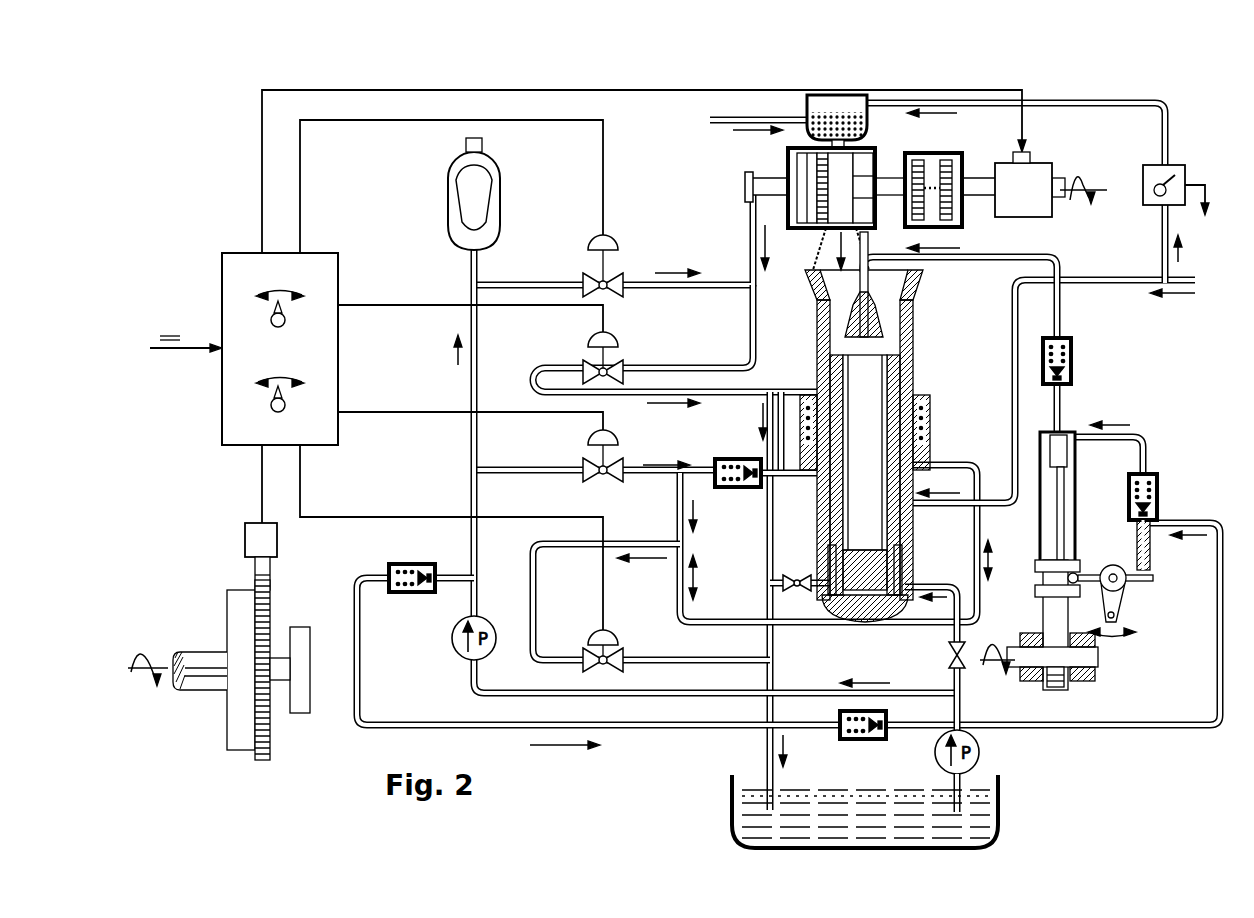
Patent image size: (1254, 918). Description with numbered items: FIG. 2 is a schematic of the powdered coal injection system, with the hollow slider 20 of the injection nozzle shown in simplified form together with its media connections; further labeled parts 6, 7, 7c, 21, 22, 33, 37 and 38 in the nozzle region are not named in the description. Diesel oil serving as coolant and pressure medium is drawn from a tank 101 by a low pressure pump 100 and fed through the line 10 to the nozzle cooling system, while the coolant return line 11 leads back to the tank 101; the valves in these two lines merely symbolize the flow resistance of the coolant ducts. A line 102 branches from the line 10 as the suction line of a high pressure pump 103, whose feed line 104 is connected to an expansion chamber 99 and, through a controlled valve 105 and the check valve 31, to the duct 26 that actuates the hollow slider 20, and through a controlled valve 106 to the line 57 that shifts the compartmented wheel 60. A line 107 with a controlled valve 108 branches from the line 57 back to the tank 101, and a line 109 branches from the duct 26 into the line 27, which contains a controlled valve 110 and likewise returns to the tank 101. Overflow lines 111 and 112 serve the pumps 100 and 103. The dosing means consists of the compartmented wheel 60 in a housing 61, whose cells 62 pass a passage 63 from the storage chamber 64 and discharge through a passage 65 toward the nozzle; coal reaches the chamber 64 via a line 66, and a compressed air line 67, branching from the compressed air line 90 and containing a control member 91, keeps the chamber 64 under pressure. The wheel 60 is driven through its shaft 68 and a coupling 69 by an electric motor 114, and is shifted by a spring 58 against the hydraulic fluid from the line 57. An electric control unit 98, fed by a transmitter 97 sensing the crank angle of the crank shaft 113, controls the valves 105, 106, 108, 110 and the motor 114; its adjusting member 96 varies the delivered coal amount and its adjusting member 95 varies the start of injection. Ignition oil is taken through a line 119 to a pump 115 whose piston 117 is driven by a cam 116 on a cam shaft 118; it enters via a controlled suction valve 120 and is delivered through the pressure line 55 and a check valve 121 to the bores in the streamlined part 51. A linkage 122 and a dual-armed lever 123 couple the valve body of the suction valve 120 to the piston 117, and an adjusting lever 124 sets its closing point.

The guide sleeve 6 is at (832, 552).
The piston 7 is at (858, 600).
The piston head 7c is at (870, 548).
The line 10 is at (955, 610).
The coolant return line 11 is at (797, 592).
The hollow slider 20 is at (912, 372).
The left chamber 21 is at (815, 452).
The right chamber 22 is at (925, 412).
The duct 26 is at (525, 467).
The line 27 is at (945, 462).
The check valve 31 is at (740, 488).
The line 33 is at (1108, 284).
The piston rod 37 is at (838, 515).
The seal 38 is at (866, 570).
The central part 51 is at (880, 320).
The ignition oil supply line 55 is at (955, 262).
The line 57 is at (535, 282).
The spring 58 is at (934, 160).
The compartmented wheel 60 is at (805, 222).
The housing 61 is at (870, 228).
The cells 62 is at (822, 224).
The passage 63 is at (858, 153).
The storage chamber 64 is at (807, 97).
The passage 65 is at (845, 252).
The line 66 is at (735, 117).
The compressed air line 67 is at (992, 108).
The shaft 68 is at (745, 188).
The coupling 69 is at (950, 228).
The line 90 is at (1200, 262).
The control member 91 is at (1146, 170).
The adjusting member 95 is at (284, 410).
The adjusting member 96 is at (286, 320).
The transmitter 97 is at (280, 547).
The electric control unit 98 is at (342, 372).
The expansion chamber 99 is at (496, 200).
The low pressure pump 100 is at (975, 757).
The tank 101 is at (996, 805).
The line 102 is at (470, 673).
The high pressure pump 103 is at (486, 652).
The feed line 104 is at (478, 333).
The controlled valve 105 is at (603, 480).
The controlled valve 106 is at (612, 280).
The line 107 is at (750, 316).
The controlled valve 108 is at (610, 366).
The line 109 is at (678, 520).
The controlled valve 110 is at (610, 656).
The overflow line 111 is at (908, 730).
The overflow line 112 is at (360, 612).
The crank shaft 113 is at (212, 683).
The electric motor 114 is at (1022, 218).
The pump 115 is at (1076, 500).
The cam 116 is at (1043, 615).
The piston 117 is at (1062, 548).
The cam shaft 118 is at (1090, 655).
The line 119 is at (1145, 446).
The controlled suction valve 120 is at (1162, 490).
The check valve 121 is at (1076, 355).
The linkage 122 is at (1150, 562).
The dual-armed lever 123 is at (1150, 580).
The adjusting lever 124 is at (1117, 600).